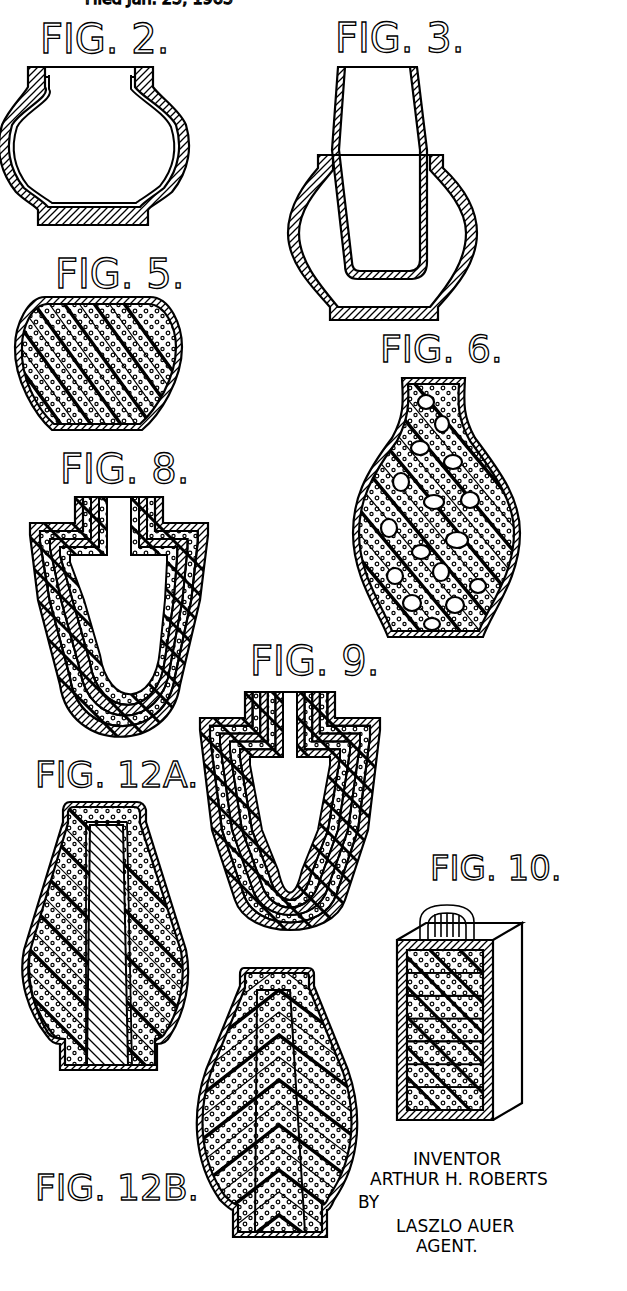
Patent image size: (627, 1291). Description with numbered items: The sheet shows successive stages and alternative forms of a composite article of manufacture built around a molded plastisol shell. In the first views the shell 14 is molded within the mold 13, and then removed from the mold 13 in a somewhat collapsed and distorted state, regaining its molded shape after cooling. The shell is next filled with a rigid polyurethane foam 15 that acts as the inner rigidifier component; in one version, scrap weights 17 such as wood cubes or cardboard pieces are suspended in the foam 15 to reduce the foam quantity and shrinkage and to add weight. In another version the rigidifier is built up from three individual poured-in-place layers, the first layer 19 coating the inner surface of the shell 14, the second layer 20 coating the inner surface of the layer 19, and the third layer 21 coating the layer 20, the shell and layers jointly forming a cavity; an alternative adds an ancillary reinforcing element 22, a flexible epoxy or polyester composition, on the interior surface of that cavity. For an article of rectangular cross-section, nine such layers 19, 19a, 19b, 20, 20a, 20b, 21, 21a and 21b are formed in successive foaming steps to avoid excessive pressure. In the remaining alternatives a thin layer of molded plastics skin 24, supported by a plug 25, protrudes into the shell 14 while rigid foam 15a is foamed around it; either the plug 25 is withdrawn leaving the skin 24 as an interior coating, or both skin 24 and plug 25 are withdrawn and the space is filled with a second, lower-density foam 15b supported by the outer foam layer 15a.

In FIG. 2, the mold 13 is at (176, 106).
In FIG. 3, the mold 13 is at (476, 228).
In FIG. 2, the molded plastisol shell 14 is at (180, 172).
In FIG. 3, the molded plastisol shell 14 is at (420, 103).
In FIG. 5, the molded plastisol shell 14 is at (182, 347).
In FIG. 6, the molded plastisol shell 14 is at (477, 462).
In FIG. 8, the molded plastisol shell 14 is at (205, 565).
In FIG. 9, the molded plastisol shell 14 is at (380, 742).
In FIG. 12A, the molded plastisol shell 14 is at (70, 848).
In FIG. 12B, the molded plastisol shell 14 is at (212, 1080).
In FIG. 10, the molded plastisol shell 14 is at (493, 1113).
In FIG. 5, the rigid polyurethane foam 15 is at (165, 360).
In FIG. 6, the rigid polyurethane foam 15 is at (490, 507).
In FIG. 12A, the rigid polyurethane foam 15 is at (172, 940).
In FIG. 12A, the rigid polyurethane foam 15a is at (42, 1020).
In FIG. 12B, the rigid polyurethane foam 15a is at (217, 1120).
In FIG. 12B, the second quantity of rigid polyurethane foam 15b is at (262, 992).
In FIG. 6, the weights 17 is at (505, 565).
In FIG. 8, the rigid polyurethane foam layer 19 is at (186, 648).
In FIG. 9, the rigid polyurethane foam layer 19 is at (354, 861).
In FIG. 10, the rigid polyurethane foam layer 19 is at (397, 1108).
In FIG. 10, the rigid polyurethane foam layer 19a is at (397, 1090).
In FIG. 10, the rigid polyurethane foam layer 19b is at (397, 1066).
In FIG. 8, the rigid polyurethane foam layer 20 is at (198, 632).
In FIG. 9, the rigid polyurethane foam layer 20 is at (355, 838).
In FIG. 10, the rigid polyurethane foam layer 20 is at (485, 1050).
In FIG. 10, the rigid polyurethane foam layer 20a is at (397, 1030).
In FIG. 10, the rigid polyurethane foam layer 20b is at (397, 1005).
In FIG. 8, the rigid polyurethane foam layer 21 is at (170, 582).
In FIG. 9, the rigid polyurethane foam layer 21 is at (352, 776).
In FIG. 10, the rigid polyurethane foam layer 21 is at (397, 993).
In FIG. 10, the rigid polyurethane foam layer 21a is at (485, 985).
In FIG. 10, the rigid polyurethane foam layer 21b is at (397, 948).
In FIG. 9, the ancillary reinforcing element 22 is at (348, 873).
In FIG. 12A, the thin layer of molded plastics skin 24 is at (90, 1072).
In FIG. 12A, the plug 25 is at (114, 1072).